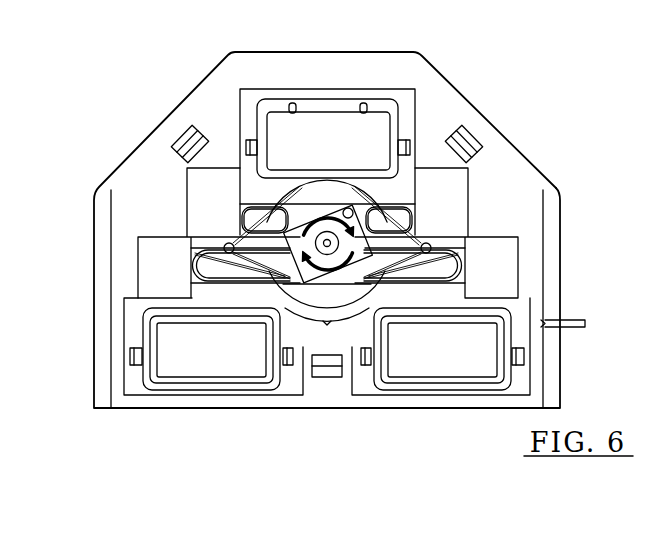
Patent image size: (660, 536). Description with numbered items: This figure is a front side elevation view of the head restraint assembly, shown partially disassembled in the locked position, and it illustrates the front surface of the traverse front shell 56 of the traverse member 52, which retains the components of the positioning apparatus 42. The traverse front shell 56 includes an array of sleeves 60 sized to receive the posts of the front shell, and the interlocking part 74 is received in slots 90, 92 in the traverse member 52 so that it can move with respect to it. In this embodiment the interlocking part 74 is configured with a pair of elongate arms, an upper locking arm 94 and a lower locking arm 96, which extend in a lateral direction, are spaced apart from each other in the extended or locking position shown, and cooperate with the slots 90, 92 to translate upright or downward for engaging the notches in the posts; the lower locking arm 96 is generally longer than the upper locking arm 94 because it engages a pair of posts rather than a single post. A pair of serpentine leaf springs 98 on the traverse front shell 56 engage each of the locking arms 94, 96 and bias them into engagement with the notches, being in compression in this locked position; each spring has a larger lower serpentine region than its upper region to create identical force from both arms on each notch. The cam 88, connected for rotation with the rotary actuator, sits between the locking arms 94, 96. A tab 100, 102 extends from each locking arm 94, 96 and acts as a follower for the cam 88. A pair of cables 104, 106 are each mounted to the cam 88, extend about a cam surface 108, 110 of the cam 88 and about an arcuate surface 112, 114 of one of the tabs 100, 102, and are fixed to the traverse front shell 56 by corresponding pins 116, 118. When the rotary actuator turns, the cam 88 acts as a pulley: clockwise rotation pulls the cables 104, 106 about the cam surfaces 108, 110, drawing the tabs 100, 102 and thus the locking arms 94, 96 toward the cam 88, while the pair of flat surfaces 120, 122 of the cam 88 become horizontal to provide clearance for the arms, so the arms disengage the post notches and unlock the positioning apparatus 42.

The positioning apparatus 42 is at (142, 80).
The traverse member 52 is at (508, 126).
The traverse front shell 56 is at (452, 81).
The sleeves 60 is at (140, 372).
The interlocking part 74 is at (86, 332).
The cam 88 is at (380, 200).
The slot 90 is at (243, 200).
The slot 92 is at (196, 256).
The upper locking arm 94 is at (252, 176).
The lower locking arm 96 is at (215, 288).
The serpentine leaf springs 98 is at (238, 282).
The tab 100 is at (337, 190).
The tab 102 is at (305, 296).
The cable 104 is at (225, 245).
The cable 106 is at (401, 276).
The cam surface 108 is at (372, 226).
The cam surface 110 is at (285, 251).
The arcuate surface 112 is at (320, 190).
The arcuate surface 114 is at (340, 322).
The pin 116 is at (240, 237).
The pin 118 is at (431, 250).
The flat surface 120 is at (298, 222).
The flat surface 122 is at (364, 262).